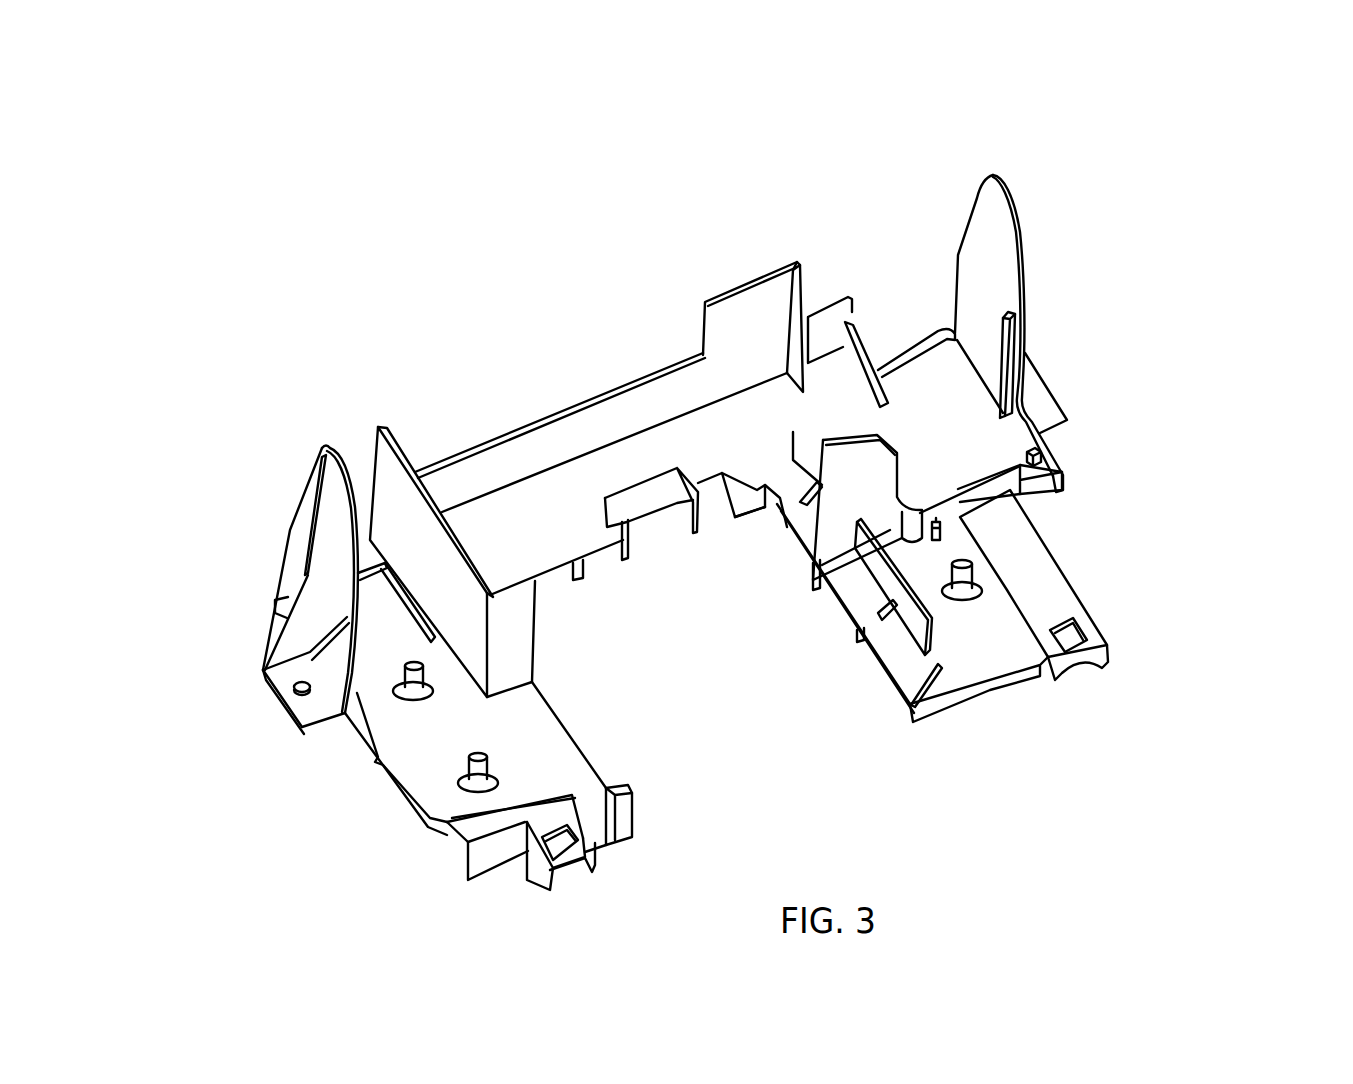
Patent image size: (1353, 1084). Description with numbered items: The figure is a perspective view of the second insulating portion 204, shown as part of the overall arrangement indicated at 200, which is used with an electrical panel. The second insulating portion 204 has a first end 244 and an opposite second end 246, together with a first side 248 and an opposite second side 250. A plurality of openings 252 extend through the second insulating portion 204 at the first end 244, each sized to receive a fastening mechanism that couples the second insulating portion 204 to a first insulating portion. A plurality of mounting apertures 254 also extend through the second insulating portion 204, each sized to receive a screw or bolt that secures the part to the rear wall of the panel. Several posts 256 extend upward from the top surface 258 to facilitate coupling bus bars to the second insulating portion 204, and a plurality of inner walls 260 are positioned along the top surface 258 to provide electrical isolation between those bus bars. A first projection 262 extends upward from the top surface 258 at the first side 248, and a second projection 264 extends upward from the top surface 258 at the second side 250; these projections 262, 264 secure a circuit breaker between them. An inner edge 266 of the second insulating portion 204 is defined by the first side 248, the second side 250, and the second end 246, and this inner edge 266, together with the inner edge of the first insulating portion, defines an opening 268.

The carrier assembly 200 is at (1125, 145).
The second insulating portion 204 is at (1105, 333).
The first end 244 is at (790, 760).
The second end 246 is at (540, 375).
The first side 248 is at (318, 782).
The second side 250 is at (1085, 453).
The openings 252 is at (560, 840).
The mounting apertures 254 is at (290, 683).
The posts 256 is at (958, 582).
The top surface 258 is at (915, 383).
The inner walls 260 is at (392, 482).
The first projection 262 is at (317, 500).
The second projection 264 is at (992, 207).
The inner edge 266 is at (603, 790).
The opening 268 is at (689, 623).